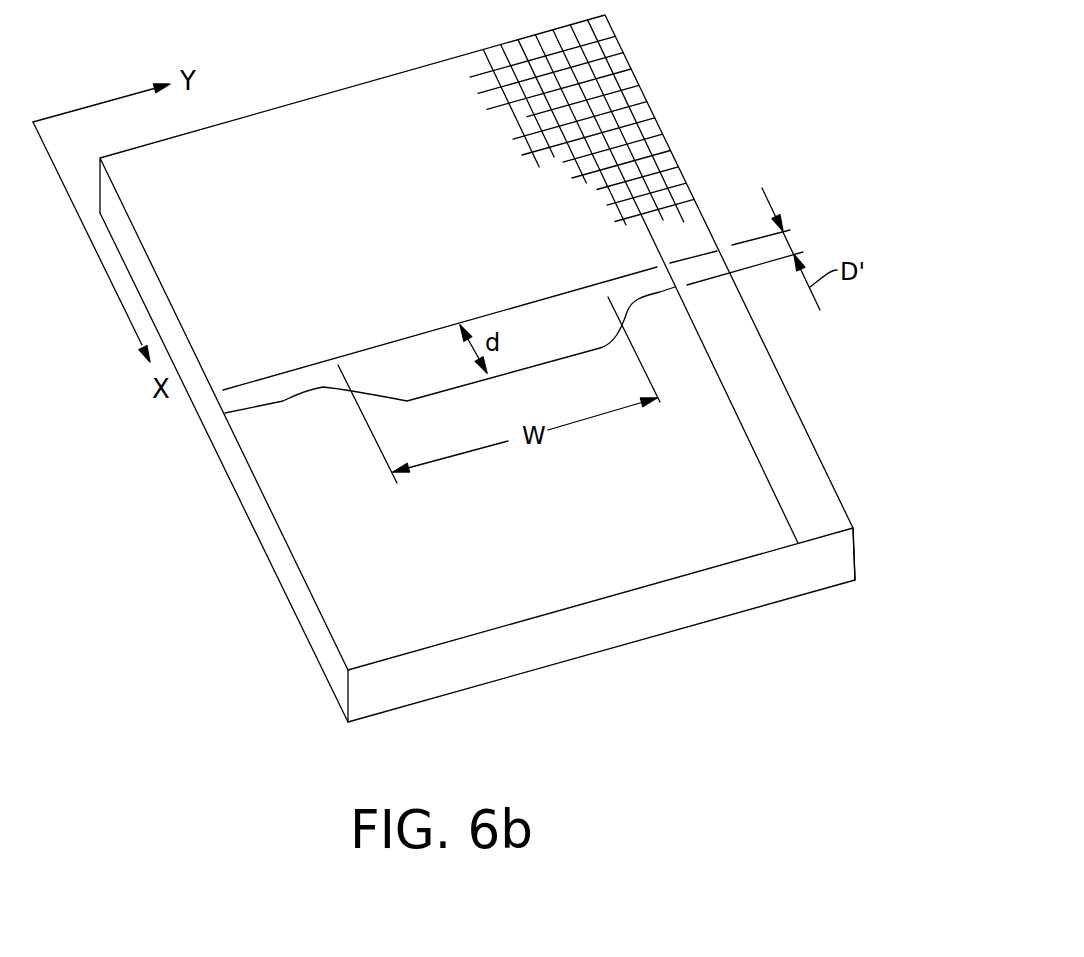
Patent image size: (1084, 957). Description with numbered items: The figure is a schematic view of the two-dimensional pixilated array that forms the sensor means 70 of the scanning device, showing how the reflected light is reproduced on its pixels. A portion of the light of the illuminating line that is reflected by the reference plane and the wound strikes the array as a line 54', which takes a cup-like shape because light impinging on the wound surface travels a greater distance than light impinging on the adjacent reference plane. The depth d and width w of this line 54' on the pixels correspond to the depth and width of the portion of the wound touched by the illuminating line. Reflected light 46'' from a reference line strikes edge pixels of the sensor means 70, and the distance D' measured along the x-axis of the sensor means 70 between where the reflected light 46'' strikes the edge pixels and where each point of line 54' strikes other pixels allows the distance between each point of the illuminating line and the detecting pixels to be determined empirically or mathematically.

The sensor means 70 is at (641, 83).
The reflected light 46'' is at (513, 286).
The line 54' is at (408, 404).